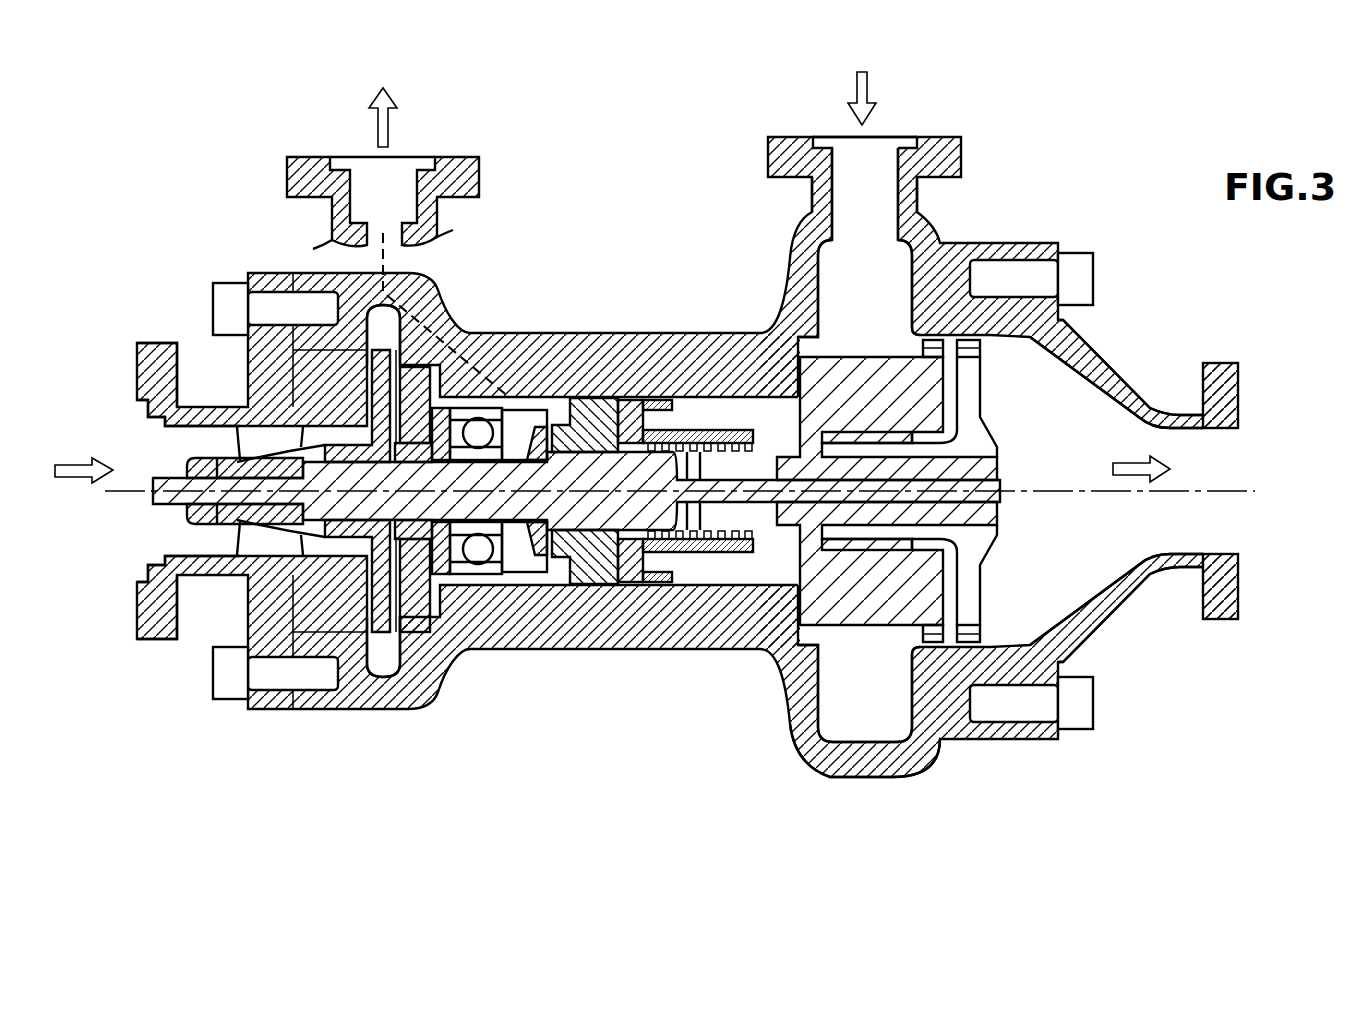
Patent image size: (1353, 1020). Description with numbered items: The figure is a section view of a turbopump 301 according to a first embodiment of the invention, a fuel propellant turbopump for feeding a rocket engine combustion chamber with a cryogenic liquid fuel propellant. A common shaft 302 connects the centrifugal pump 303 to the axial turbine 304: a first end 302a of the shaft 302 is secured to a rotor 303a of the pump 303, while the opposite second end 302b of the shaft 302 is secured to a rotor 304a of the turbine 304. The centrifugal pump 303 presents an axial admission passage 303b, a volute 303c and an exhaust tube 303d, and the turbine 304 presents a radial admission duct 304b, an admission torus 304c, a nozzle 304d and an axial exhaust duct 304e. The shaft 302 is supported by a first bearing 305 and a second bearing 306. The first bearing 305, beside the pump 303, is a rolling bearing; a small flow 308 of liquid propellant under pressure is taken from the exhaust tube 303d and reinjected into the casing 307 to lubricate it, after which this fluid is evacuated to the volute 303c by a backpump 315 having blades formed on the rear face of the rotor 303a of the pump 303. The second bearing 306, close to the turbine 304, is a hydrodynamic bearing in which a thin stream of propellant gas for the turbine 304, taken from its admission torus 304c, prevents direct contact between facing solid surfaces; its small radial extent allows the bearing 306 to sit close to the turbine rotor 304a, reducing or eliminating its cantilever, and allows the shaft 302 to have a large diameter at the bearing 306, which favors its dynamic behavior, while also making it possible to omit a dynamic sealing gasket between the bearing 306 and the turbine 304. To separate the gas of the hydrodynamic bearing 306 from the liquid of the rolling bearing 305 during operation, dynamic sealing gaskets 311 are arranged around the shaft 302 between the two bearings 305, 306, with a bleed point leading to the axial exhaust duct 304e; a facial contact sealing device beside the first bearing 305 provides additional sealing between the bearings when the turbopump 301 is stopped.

The turbopump 301 is at (173, 695).
The shaft 302 is at (600, 515).
The first end of the shaft 302a is at (432, 612).
The second end of the shaft 302b is at (906, 507).
The centrifugal pump 303 is at (277, 360).
The rotor of the pump 303a is at (425, 365).
The axial admission passage 303b is at (168, 452).
The volute 303c is at (383, 664).
The exhaust tube 303d is at (400, 192).
The axial turbine 304 is at (958, 260).
The rotor of the turbine 304a is at (985, 348).
The radial admission duct 304b is at (878, 172).
The admission torus 304c is at (878, 724).
The nozzle 304d is at (918, 345).
The axial exhaust duct 304e is at (1198, 460).
The first bearing 305 is at (482, 400).
The second bearing 306 is at (878, 596).
The casing 307 is at (675, 360).
The small flow of liquid propellant 308 is at (392, 263).
The dynamic sealing gaskets 311 is at (738, 554).
The backpump 315 is at (408, 640).